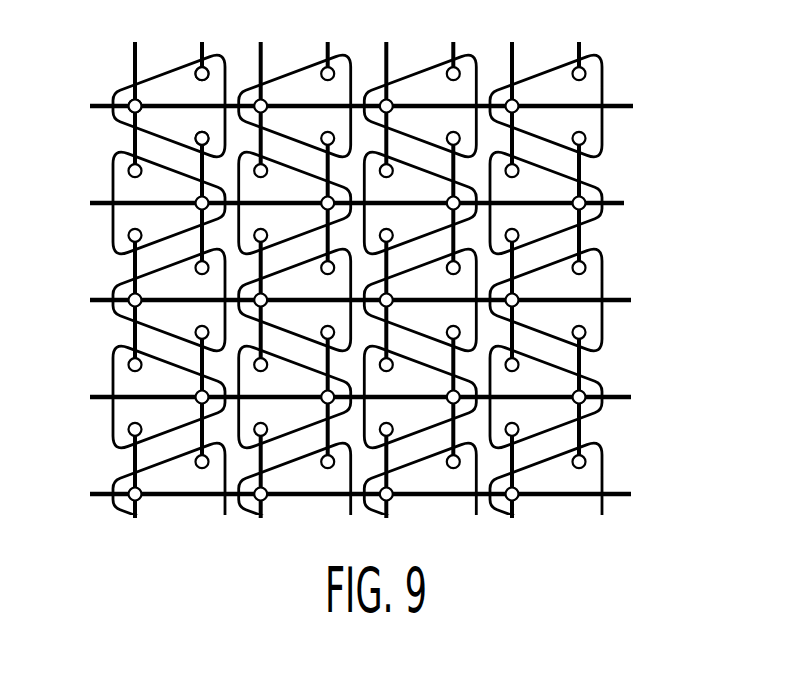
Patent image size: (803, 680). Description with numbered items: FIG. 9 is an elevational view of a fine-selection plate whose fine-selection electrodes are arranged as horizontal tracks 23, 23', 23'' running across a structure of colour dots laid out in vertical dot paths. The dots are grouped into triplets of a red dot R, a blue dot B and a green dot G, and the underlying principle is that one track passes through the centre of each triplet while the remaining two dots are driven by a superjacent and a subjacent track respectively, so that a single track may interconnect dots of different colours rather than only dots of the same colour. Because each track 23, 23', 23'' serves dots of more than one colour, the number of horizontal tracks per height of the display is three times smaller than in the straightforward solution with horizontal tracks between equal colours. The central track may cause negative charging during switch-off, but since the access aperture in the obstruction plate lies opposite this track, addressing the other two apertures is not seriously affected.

The red colour dot R is at (128, 101).
The blue colour dot B is at (206, 70).
The green colour dot G is at (206, 143).
The horizontal track 23 is at (377, 82).
The horizontal track 23' is at (384, 178).
The horizontal track 23'' is at (383, 269).